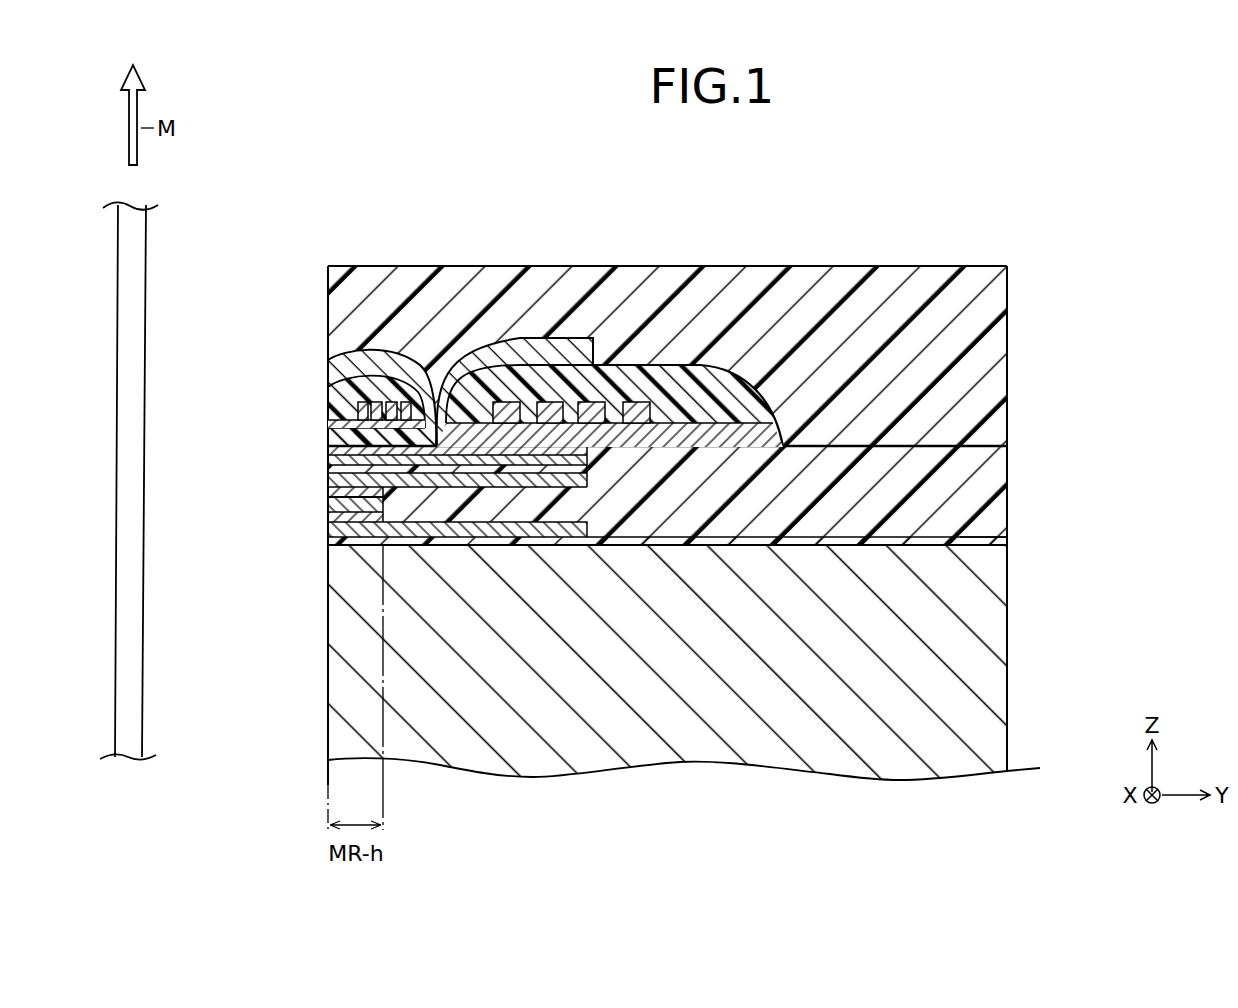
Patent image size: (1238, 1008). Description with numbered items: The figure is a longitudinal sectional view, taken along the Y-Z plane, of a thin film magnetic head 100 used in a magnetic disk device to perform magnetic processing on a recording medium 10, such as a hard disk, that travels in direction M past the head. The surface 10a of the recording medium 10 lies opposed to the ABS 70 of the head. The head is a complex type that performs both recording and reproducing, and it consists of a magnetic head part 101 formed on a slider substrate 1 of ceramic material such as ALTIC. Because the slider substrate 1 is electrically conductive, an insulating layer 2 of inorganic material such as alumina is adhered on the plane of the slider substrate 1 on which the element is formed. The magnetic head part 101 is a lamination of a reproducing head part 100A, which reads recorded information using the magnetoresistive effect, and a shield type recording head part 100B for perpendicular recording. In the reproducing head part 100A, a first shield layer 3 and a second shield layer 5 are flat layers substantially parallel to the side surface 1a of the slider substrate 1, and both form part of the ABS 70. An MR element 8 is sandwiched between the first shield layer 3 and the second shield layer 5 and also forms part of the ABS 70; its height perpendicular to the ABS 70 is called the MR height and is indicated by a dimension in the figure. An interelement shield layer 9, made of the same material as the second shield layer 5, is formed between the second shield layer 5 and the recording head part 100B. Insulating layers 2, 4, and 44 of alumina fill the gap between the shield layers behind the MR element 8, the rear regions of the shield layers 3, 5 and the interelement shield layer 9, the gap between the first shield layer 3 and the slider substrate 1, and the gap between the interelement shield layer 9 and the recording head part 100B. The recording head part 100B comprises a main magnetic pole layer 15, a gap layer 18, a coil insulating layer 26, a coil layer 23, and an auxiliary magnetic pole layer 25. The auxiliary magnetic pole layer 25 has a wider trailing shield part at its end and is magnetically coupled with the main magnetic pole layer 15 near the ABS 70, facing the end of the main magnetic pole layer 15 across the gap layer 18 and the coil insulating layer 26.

The slider substrate 1 is at (1000, 640).
The side surface 1a is at (975, 538).
The insulating layer 2 is at (330, 541).
The first shield layer 3 is at (330, 530).
The insulating layer 4 is at (1000, 511).
The second shield layer 5 is at (330, 490).
The MR element 8 is at (330, 514).
The interelement shield layer 9 is at (330, 458).
The recording medium 10 is at (118, 640).
The surface 10a is at (144, 630).
The main magnetic pole layer 15 is at (332, 438).
The gap layer 18 is at (335, 425).
The coil layer 23 is at (335, 407).
The auxiliary magnetic pole layer 25 is at (335, 372).
The coil insulating layer 26 is at (333, 388).
The insulating layer 44 is at (1000, 328).
The ABS 70 is at (320, 593).
The thin film magnetic head 100 is at (1041, 383).
The reproducing head part 100A is at (255, 480).
The recording head part 100B is at (243, 313).
The magnetic head part 101 is at (1094, 479).